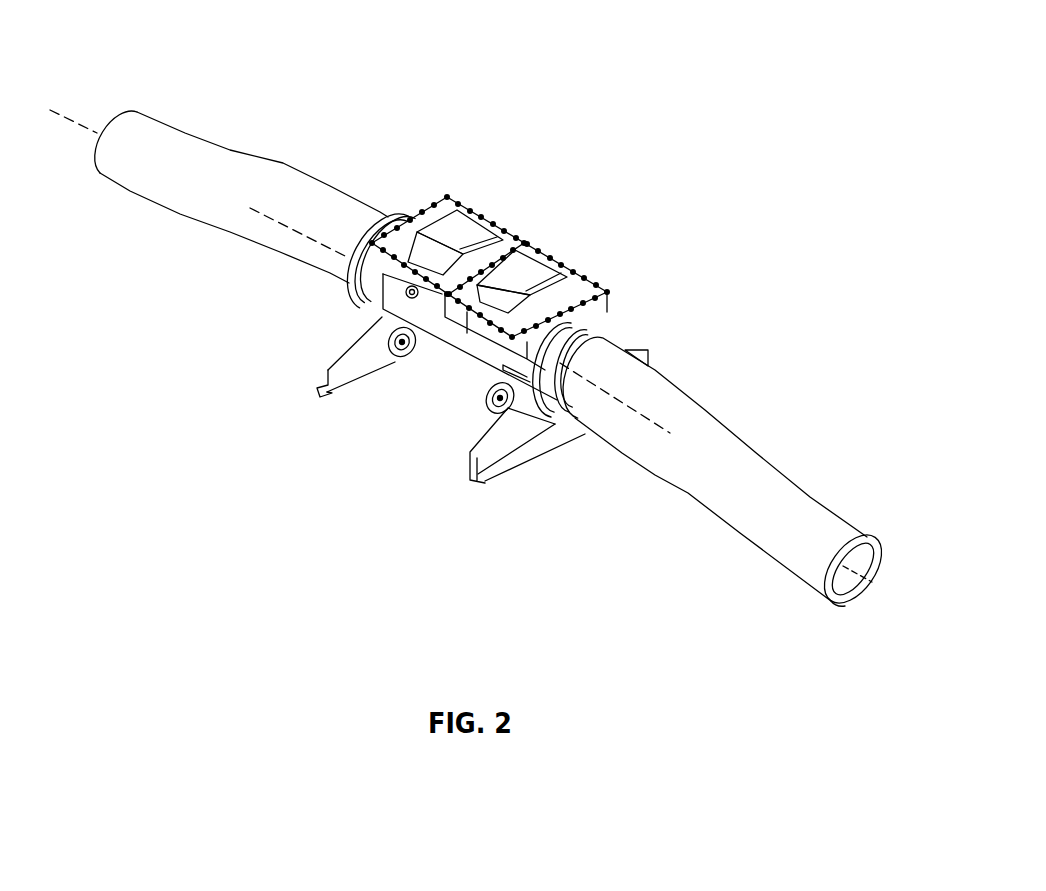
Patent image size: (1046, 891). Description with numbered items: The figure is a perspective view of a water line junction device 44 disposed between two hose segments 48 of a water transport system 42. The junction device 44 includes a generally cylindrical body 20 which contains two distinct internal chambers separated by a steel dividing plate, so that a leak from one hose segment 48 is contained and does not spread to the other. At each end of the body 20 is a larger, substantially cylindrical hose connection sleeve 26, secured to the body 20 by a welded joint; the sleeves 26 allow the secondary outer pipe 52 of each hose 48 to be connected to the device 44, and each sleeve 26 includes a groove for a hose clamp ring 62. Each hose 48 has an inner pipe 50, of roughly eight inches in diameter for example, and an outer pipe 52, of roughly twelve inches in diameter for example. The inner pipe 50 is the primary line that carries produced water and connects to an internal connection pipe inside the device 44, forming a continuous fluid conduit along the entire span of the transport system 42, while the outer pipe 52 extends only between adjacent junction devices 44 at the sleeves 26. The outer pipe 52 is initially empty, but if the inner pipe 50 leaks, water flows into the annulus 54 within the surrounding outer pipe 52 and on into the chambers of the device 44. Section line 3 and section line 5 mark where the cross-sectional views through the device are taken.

The section line 3- 3 is at (50, 110).
The section line 5- 5 is at (250, 208).
The body 20 is at (453, 363).
The hose connection sleeve 26 is at (362, 283).
The transport system 42 is at (506, 305).
The water line junction device 44 is at (581, 260).
The hose segment 48 is at (288, 156).
The inner pipe 50 is at (866, 583).
The outer pipe 52 is at (823, 520).
The annulus 54 is at (841, 600).
The clamp ring 62 is at (395, 212).